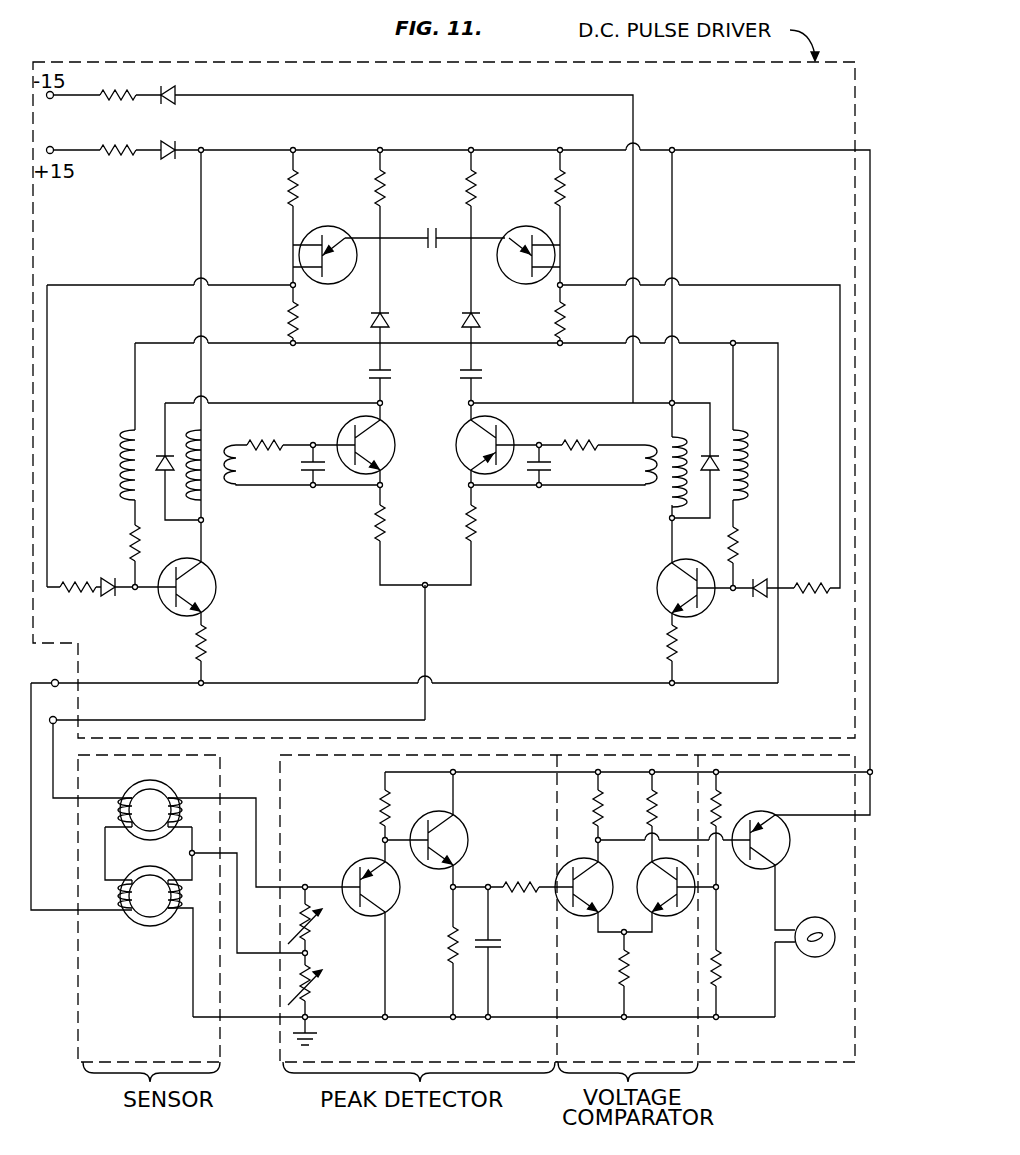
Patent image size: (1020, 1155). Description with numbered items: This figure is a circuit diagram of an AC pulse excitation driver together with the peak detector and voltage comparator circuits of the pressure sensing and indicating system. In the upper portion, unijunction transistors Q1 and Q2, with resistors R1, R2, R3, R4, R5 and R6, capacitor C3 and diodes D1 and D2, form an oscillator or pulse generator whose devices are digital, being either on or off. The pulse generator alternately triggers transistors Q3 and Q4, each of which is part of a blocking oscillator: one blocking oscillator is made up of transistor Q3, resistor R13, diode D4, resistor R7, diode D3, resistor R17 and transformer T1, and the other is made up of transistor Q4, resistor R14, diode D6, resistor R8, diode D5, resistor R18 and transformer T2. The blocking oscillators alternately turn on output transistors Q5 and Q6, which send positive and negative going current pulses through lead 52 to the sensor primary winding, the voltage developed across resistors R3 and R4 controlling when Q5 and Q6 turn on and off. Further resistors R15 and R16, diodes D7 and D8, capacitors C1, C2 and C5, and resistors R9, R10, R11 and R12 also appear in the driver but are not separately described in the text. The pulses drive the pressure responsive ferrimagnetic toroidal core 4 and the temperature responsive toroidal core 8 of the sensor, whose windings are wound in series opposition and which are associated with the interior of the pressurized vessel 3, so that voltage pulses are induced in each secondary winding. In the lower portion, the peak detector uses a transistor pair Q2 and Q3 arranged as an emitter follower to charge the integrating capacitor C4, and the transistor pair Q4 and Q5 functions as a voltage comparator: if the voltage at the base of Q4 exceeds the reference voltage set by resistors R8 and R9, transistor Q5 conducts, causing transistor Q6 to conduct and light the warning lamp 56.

The resistor R1 is at (300, 200).
The resistor R2 is at (563, 200).
The resistor R3 is at (287, 318).
The resistor R4 is at (575, 325).
The resistor R5 is at (383, 200).
The resistor R6 is at (474, 200).
The resistor R7 is at (128, 540).
The resistor R8 is at (745, 555).
The resistor R9 is at (270, 445).
The resistor R10 is at (582, 446).
The resistor R11 is at (375, 530).
The resistor R12 is at (468, 533).
The resistor R13 is at (70, 592).
The resistor R14 is at (812, 598).
The resistor R15 is at (122, 88).
The resistor R16 is at (120, 158).
The resistor R17 is at (214, 655).
The resistor R18 is at (662, 642).
The diode D1 is at (390, 318).
The diode D2 is at (481, 318).
The diode D3 is at (160, 452).
The diode D4 is at (117, 595).
The diode D5 is at (708, 478).
The diode D6 is at (762, 598).
The diode D7 is at (172, 100).
The diode D8 is at (170, 143).
The capacitor C1 is at (385, 380).
The capacitor C2 is at (477, 380).
The capacitor C3 is at (427, 245).
The integrating capacitor C4 is at (302, 468).
The capacitor C5 is at (552, 466).
The unijunction transistor Q1 is at (350, 278).
The unijunction transistor Q2 is at (500, 276).
The transistor Q3 is at (217, 592).
The transistor Q4 is at (660, 583).
The output transistor Q5 is at (393, 448).
The output transistor Q6 is at (455, 450).
The transformer T1 is at (212, 487).
The transformer T2 is at (665, 487).
The lead 52 is at (428, 655).
The pressurized vessel 3 is at (78, 985).
The first pressure responsive ferrimagnetic torroidal core 4 is at (162, 787).
The second temperature responsive ferrimagnetic torroidal core 8 is at (132, 923).
The warning lamp 56 is at (815, 958).